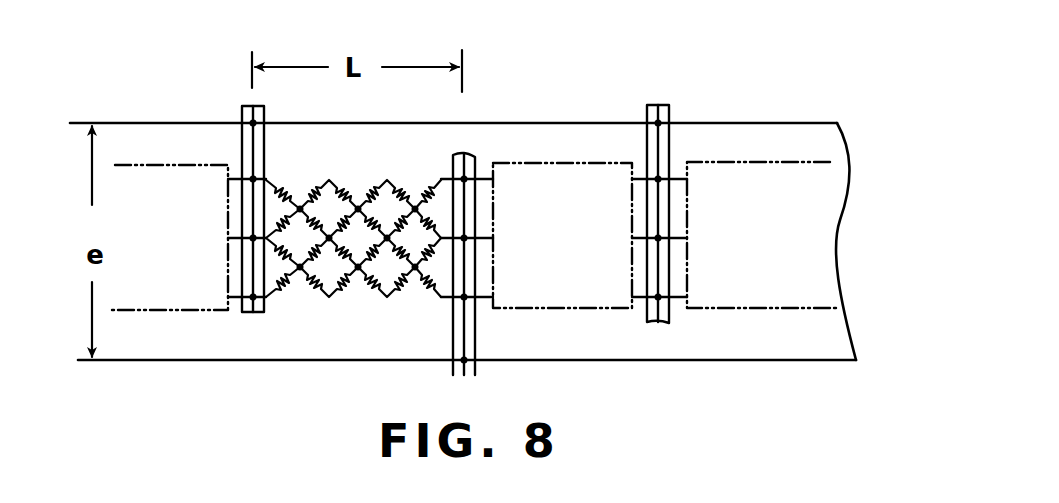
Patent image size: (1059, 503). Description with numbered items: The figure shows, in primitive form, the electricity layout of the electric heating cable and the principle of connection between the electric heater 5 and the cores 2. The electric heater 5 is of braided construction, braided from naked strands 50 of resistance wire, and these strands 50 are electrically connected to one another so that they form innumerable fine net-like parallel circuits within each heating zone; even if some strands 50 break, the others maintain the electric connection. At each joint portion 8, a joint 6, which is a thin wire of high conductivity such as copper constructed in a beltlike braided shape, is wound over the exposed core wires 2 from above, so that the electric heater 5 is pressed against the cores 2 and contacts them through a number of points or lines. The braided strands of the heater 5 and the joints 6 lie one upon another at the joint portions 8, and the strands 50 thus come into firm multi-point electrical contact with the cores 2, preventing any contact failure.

The core wires 2 is at (256, 292).
The electric heater 5 is at (148, 142).
The joint 6 is at (242, 106).
The joint portion 8 is at (240, 92).
The strands 50 is at (332, 300).